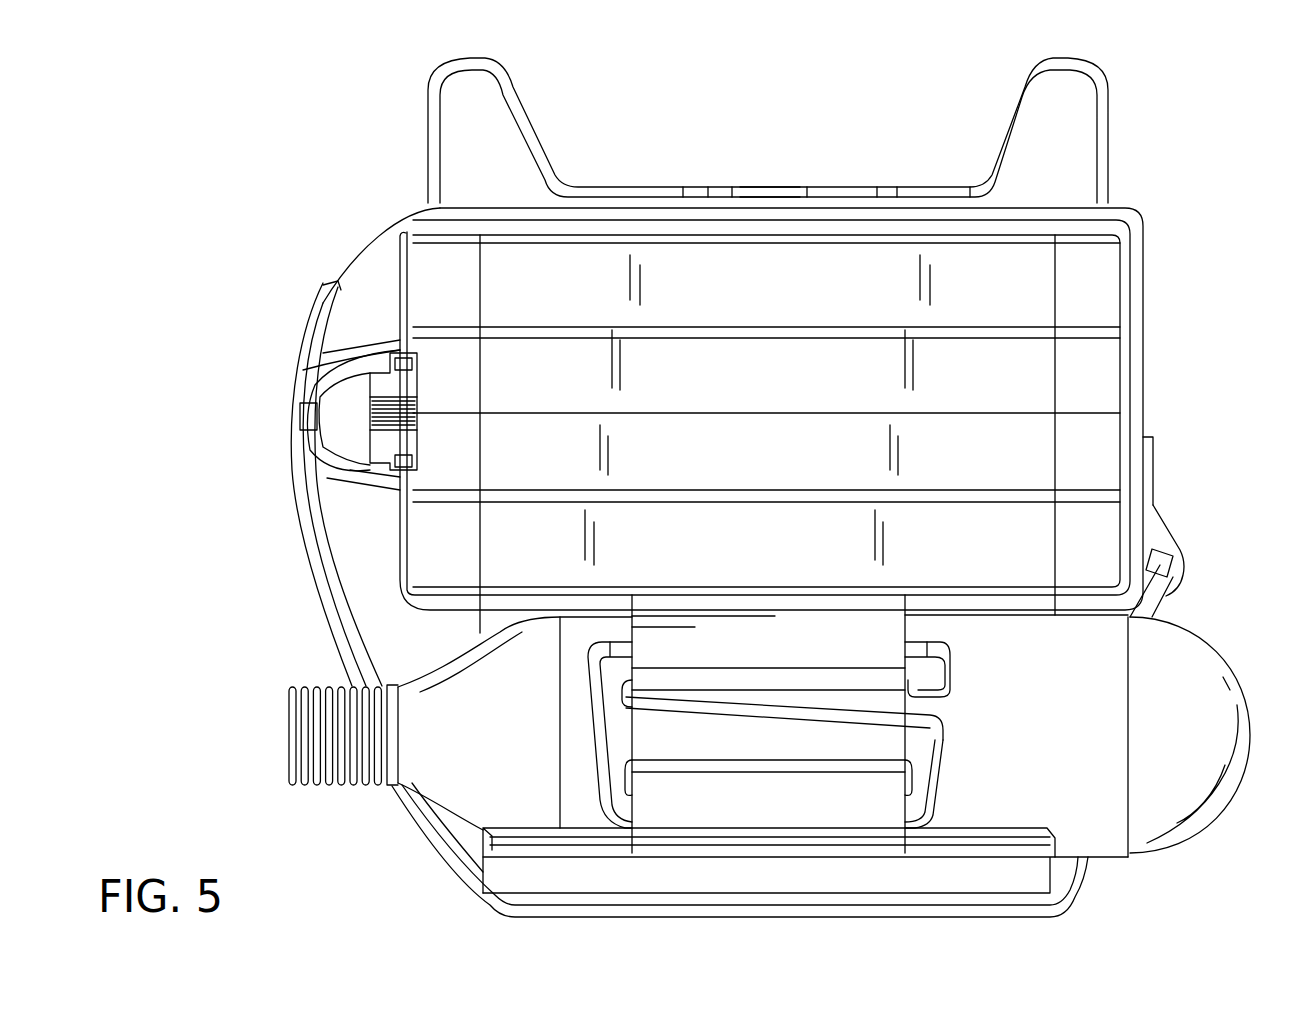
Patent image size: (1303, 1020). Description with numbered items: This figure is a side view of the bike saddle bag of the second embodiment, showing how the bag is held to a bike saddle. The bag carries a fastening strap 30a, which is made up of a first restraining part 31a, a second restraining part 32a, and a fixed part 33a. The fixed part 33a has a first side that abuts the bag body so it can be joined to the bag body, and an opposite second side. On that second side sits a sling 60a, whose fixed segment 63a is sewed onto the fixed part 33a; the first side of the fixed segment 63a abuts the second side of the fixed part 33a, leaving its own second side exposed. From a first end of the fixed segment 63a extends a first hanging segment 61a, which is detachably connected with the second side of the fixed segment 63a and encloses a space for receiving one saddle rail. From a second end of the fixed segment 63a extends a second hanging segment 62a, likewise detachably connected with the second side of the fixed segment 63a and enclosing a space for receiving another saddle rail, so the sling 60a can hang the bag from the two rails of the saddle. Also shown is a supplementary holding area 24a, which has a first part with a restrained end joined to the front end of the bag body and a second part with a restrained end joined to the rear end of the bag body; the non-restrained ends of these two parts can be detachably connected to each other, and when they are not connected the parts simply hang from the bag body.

The sling 60a is at (565, 125).
The first hanging segment 61a is at (683, 193).
The second hanging segment 62a is at (857, 193).
The fixed segment 63a is at (763, 200).
The fixed part 33a is at (927, 213).
The second restraining part 32a is at (1180, 569).
The first restraining part 31a is at (1147, 603).
The fastening strap 30a is at (382, 830).
The supplementary holding area 24a is at (1010, 877).